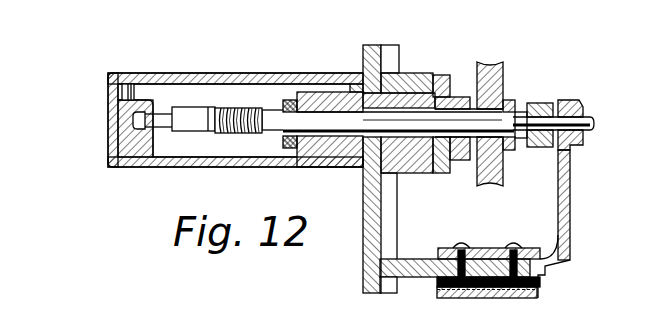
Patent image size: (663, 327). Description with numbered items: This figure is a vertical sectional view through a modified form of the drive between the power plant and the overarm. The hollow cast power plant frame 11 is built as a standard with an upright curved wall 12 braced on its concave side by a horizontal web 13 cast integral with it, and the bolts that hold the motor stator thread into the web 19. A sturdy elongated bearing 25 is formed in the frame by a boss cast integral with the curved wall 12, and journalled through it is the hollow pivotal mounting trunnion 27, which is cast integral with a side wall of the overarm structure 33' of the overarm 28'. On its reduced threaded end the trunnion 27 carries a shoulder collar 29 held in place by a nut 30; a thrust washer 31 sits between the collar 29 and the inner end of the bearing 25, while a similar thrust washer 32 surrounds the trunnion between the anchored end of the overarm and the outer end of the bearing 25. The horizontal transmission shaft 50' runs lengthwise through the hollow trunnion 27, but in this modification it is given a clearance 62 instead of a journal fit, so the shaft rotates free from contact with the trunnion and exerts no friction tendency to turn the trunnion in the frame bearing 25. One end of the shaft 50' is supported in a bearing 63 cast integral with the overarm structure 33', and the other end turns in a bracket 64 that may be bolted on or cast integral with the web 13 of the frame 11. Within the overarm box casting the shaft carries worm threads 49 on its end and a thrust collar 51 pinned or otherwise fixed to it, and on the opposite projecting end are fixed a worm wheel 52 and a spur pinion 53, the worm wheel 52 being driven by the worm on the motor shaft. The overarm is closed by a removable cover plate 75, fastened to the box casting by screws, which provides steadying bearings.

The power plant frame 11 is at (357, 286).
The upright curved wall 12 is at (372, 294).
The horizontal web 13 is at (422, 270).
The web 19 is at (542, 293).
The bearing 25 is at (408, 73).
The pivotal mounting trunnion 27 is at (416, 162).
The overarm 28' is at (195, 120).
The shoulder collar 29 is at (453, 76).
The nut 30 is at (455, 158).
The thrust washer 31 is at (438, 74).
The thrust washer 32 is at (358, 73).
The overarm structure 33' is at (220, 132).
The worm threads 49 is at (223, 120).
The transmission shaft 50' is at (363, 133).
The thrust collar 51 is at (286, 142).
The worm wheel 52 is at (497, 70).
The spur pinion 53 is at (547, 105).
The clearance 62 is at (317, 110).
The bearing 63 is at (118, 103).
The bracket 64 is at (585, 108).
The cover plate 75 is at (160, 74).